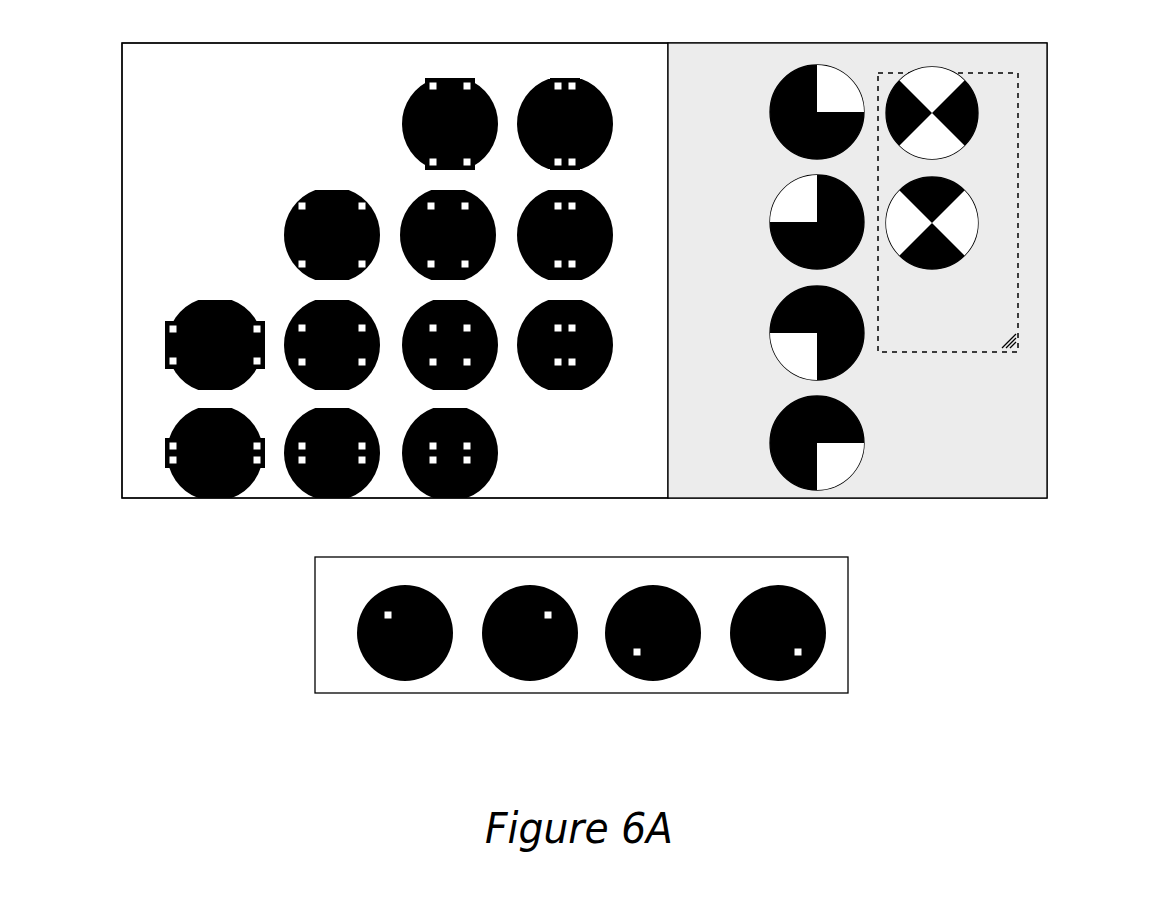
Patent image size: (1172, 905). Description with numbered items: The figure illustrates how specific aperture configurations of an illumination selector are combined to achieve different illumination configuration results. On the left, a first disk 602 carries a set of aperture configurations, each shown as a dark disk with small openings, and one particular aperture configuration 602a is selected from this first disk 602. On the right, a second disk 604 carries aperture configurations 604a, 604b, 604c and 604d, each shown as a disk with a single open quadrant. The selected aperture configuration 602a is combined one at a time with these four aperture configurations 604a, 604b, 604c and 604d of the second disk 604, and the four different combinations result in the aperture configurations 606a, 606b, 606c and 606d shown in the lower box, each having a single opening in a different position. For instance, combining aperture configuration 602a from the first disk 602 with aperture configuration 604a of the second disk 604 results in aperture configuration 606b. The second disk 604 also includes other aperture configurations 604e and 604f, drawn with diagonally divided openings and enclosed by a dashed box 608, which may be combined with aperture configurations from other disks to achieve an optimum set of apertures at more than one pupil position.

The first disk 602 is at (359, 270).
The aperture configuration 602a is at (473, 385).
The second disk 604 is at (912, 270).
The aperture configuration 604a is at (776, 130).
The aperture configuration 604b is at (772, 246).
The aperture configuration 604c is at (772, 345).
The aperture configuration 604d is at (770, 440).
The aperture configuration 604e is at (980, 122).
The aperture configuration 604f is at (970, 218).
The selection box 608 is at (1016, 319).
The aperture configuration 606a is at (378, 677).
The aperture configuration 606b is at (498, 672).
The aperture configuration 606c is at (640, 680).
The aperture configuration 606d is at (773, 680).